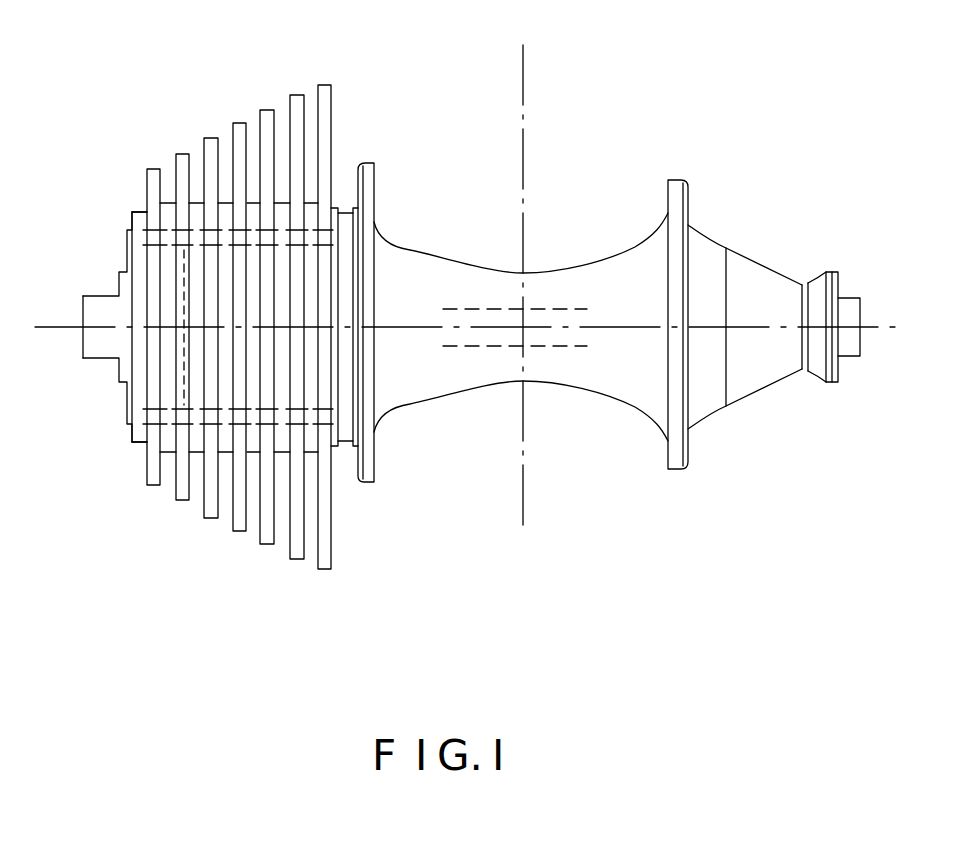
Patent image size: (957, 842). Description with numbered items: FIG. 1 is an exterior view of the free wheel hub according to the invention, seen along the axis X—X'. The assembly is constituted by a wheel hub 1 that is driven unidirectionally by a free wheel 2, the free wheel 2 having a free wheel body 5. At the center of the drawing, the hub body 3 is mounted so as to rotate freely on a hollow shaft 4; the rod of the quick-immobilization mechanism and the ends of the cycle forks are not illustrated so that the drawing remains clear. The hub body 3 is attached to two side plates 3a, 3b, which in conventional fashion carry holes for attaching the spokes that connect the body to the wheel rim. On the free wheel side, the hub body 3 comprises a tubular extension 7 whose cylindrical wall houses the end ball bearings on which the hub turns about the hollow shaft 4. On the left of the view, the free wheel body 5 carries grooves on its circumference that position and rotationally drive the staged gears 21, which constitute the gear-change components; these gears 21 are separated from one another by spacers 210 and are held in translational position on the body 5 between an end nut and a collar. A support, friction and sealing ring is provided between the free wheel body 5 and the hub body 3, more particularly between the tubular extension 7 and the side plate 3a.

The wheel hub 1 is at (543, 190).
The free wheel 2 is at (139, 59).
The staged gears 21 is at (238, 122).
The spacers 210 is at (227, 212).
The hub body 3 is at (457, 390).
The side plate 3a is at (376, 473).
The side plate 3b is at (671, 463).
The hollow shaft 4 is at (556, 356).
The free wheel body 5 is at (151, 213).
The tubular extension 7 is at (210, 277).